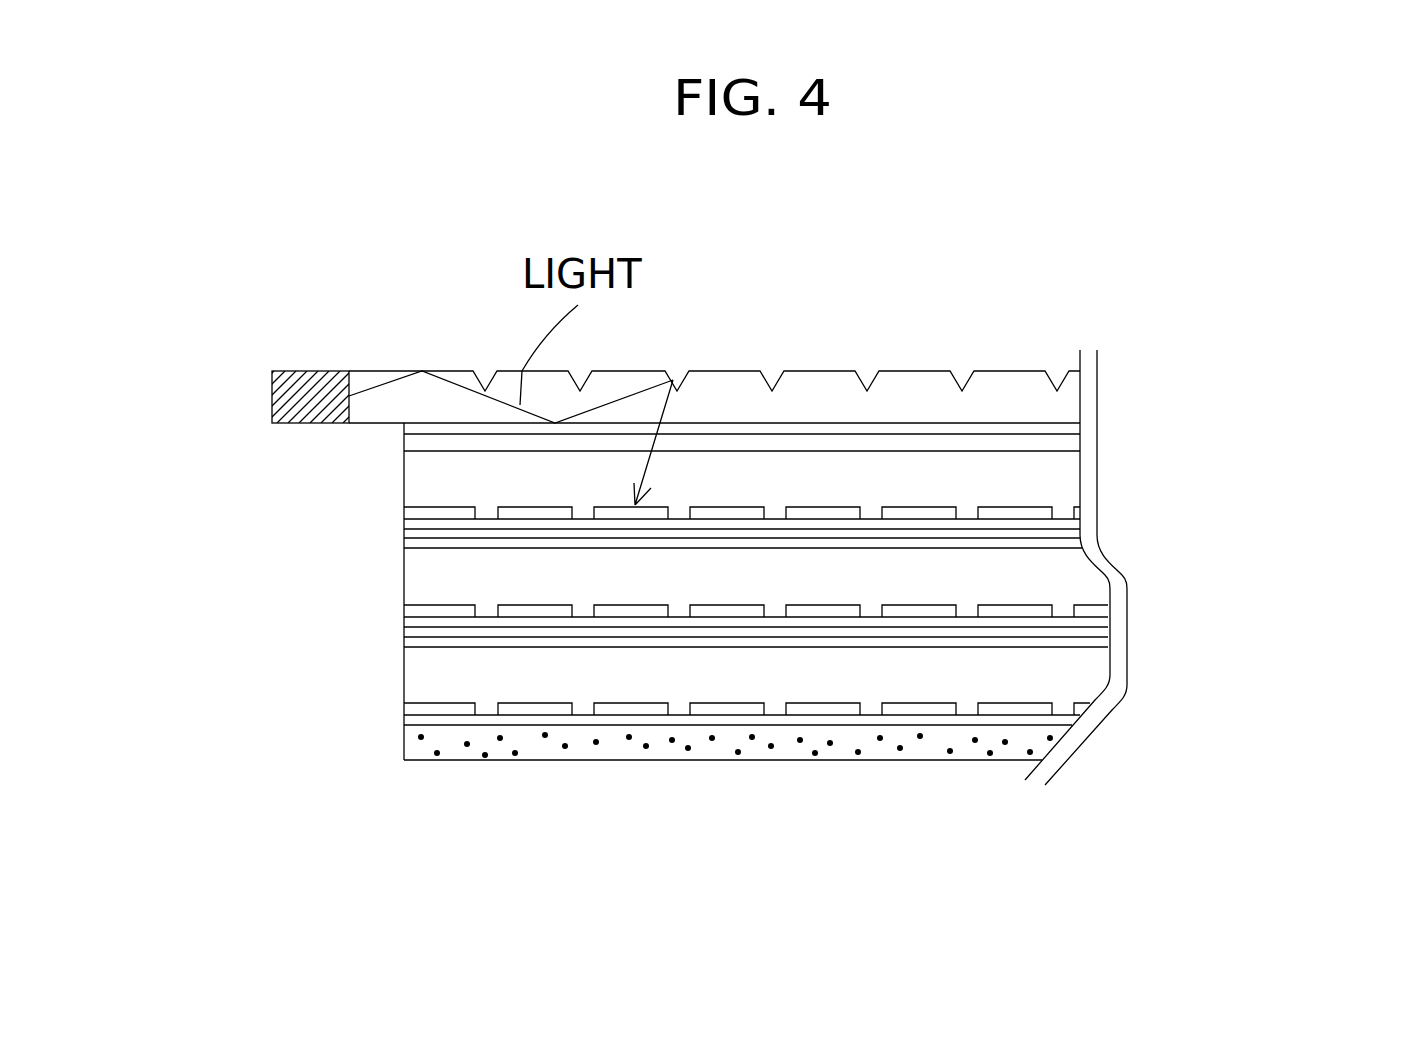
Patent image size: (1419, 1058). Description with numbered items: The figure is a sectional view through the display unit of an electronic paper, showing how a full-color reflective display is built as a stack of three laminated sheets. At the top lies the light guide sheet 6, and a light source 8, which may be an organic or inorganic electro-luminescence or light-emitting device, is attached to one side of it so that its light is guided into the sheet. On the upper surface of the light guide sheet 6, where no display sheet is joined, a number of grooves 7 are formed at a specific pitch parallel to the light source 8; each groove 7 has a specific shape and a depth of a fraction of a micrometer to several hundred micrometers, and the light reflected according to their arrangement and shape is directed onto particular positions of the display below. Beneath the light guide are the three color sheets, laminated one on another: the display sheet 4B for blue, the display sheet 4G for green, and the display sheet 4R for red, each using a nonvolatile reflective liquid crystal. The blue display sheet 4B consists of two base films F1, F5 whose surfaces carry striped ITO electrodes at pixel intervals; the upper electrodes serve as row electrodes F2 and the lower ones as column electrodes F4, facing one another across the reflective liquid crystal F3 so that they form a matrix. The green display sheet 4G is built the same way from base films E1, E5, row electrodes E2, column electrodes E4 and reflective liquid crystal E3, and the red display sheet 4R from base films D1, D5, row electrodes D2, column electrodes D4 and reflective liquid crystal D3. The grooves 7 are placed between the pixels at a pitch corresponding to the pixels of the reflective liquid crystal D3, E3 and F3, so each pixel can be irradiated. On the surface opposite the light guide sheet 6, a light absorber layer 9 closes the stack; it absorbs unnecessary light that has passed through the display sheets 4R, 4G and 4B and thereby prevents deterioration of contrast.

The display sheet for blue color 4B is at (215, 458).
The display sheet for green color 4G is at (1280, 523).
The display sheet for red color 4R is at (215, 676).
The light guide sheet 6 is at (982, 390).
The grooves 7 is at (678, 365).
The light source 8 is at (310, 372).
The light absorber layer 9 is at (580, 752).
The base film F1 is at (458, 428).
The row electrodes F2 is at (452, 443).
The reflective liquid crystal F3 is at (438, 480).
The column electrodes F4 is at (435, 514).
The base film F5 is at (437, 523).
The base film E1 is at (1062, 533).
The row electrodes E2 is at (1062, 543).
The reflective liquid crystal E3 is at (1070, 583).
The column electrodes E4 is at (1097, 610).
The base film E5 is at (1087, 622).
The base film D1 is at (430, 631).
The row electrodes D2 is at (432, 645).
The reflective liquid crystal D3 is at (450, 672).
The column electrodes D4 is at (445, 708).
The base film D5 is at (445, 722).